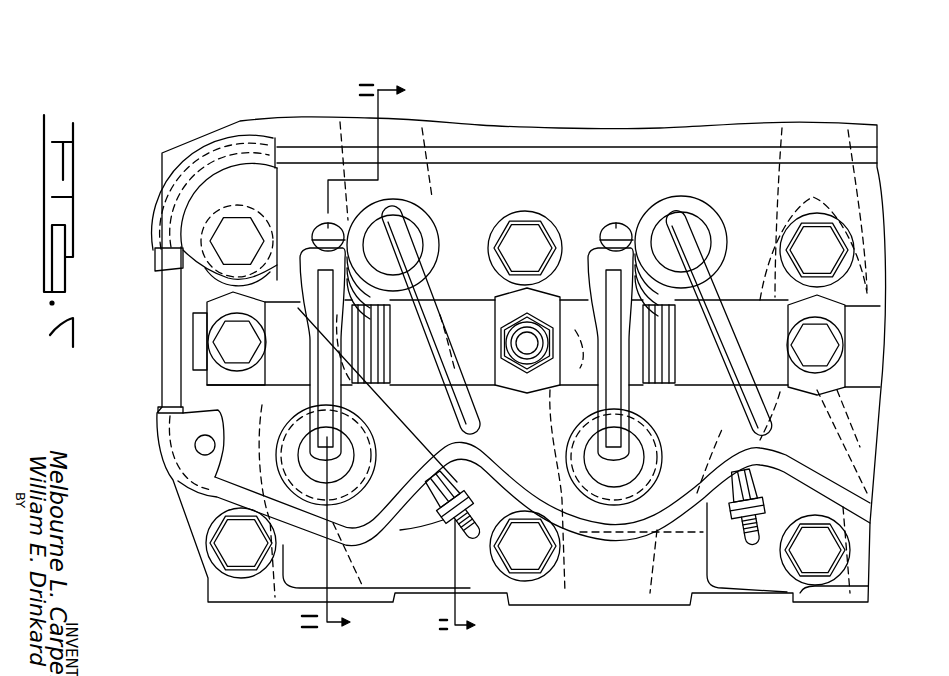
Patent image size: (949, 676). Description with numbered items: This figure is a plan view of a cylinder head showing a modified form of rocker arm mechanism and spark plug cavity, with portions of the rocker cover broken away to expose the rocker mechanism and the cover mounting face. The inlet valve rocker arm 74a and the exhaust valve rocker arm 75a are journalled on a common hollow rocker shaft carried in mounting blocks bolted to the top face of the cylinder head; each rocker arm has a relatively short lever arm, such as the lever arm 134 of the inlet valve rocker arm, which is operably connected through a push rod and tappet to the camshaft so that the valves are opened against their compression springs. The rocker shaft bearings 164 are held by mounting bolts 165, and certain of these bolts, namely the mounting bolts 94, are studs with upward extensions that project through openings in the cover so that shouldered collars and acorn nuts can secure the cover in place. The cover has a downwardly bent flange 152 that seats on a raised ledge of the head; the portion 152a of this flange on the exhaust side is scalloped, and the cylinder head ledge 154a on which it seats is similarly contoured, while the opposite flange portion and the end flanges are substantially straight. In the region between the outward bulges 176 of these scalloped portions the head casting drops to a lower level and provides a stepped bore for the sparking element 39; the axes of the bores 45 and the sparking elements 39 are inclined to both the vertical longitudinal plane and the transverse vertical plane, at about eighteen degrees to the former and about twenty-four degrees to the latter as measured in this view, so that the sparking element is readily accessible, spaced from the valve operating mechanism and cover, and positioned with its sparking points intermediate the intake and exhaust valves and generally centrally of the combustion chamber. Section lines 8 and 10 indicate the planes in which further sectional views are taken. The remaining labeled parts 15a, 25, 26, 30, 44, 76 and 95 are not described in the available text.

The section line 8- 8 is at (353, 351).
The section line 10- 10 is at (378, 463).
The cylinder head top rail 15a is at (522, 150).
The oil drain channel 25 is at (524, 472).
The passage 26 is at (328, 436).
The valve spring 30 is at (428, 170).
The sparking element 39 is at (466, 538).
The head bolt 44 is at (527, 395).
The bores 45 is at (559, 442).
The inlet valve rocker arm 74a is at (436, 296).
The exhaust valve rocker arm 75a is at (478, 450).
The valve spring seat 76 is at (505, 455).
The mounting bolts 94 is at (518, 330).
The washer 95 is at (540, 320).
The lever arm 134 is at (312, 242).
The flange 152 is at (217, 150).
The scalloped flange portion 152a is at (176, 490).
The cylinder head ledge 154a is at (275, 477).
The rocker shaft bearings 164 is at (523, 387).
The mounting bolts 165 is at (183, 262).
The outward bulges 176 is at (517, 558).